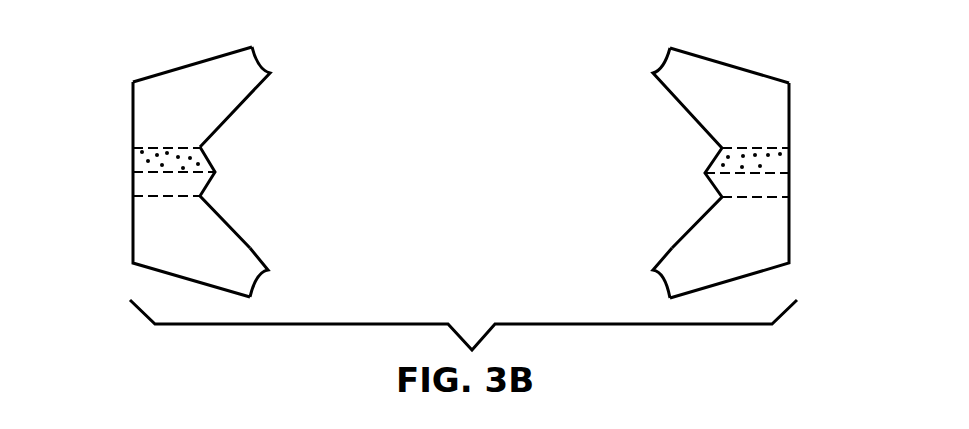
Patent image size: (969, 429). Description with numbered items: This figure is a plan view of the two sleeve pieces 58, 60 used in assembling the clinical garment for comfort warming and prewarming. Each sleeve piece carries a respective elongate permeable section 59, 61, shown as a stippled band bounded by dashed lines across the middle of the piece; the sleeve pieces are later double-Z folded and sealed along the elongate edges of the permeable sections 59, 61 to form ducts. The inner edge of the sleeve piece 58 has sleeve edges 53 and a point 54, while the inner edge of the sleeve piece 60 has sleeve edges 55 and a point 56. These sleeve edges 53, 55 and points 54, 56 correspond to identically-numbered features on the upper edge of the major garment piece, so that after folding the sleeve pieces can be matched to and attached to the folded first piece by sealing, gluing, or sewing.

The sleeve edges 53 is at (257, 92).
The point 54 is at (210, 182).
The sleeve edges 55 is at (668, 92).
The point 56 is at (705, 182).
The sleeve piece 58 is at (130, 108).
The elongate permeable section 59 is at (178, 170).
The sleeve piece 60 is at (790, 109).
The elongate permeable section 61 is at (777, 170).